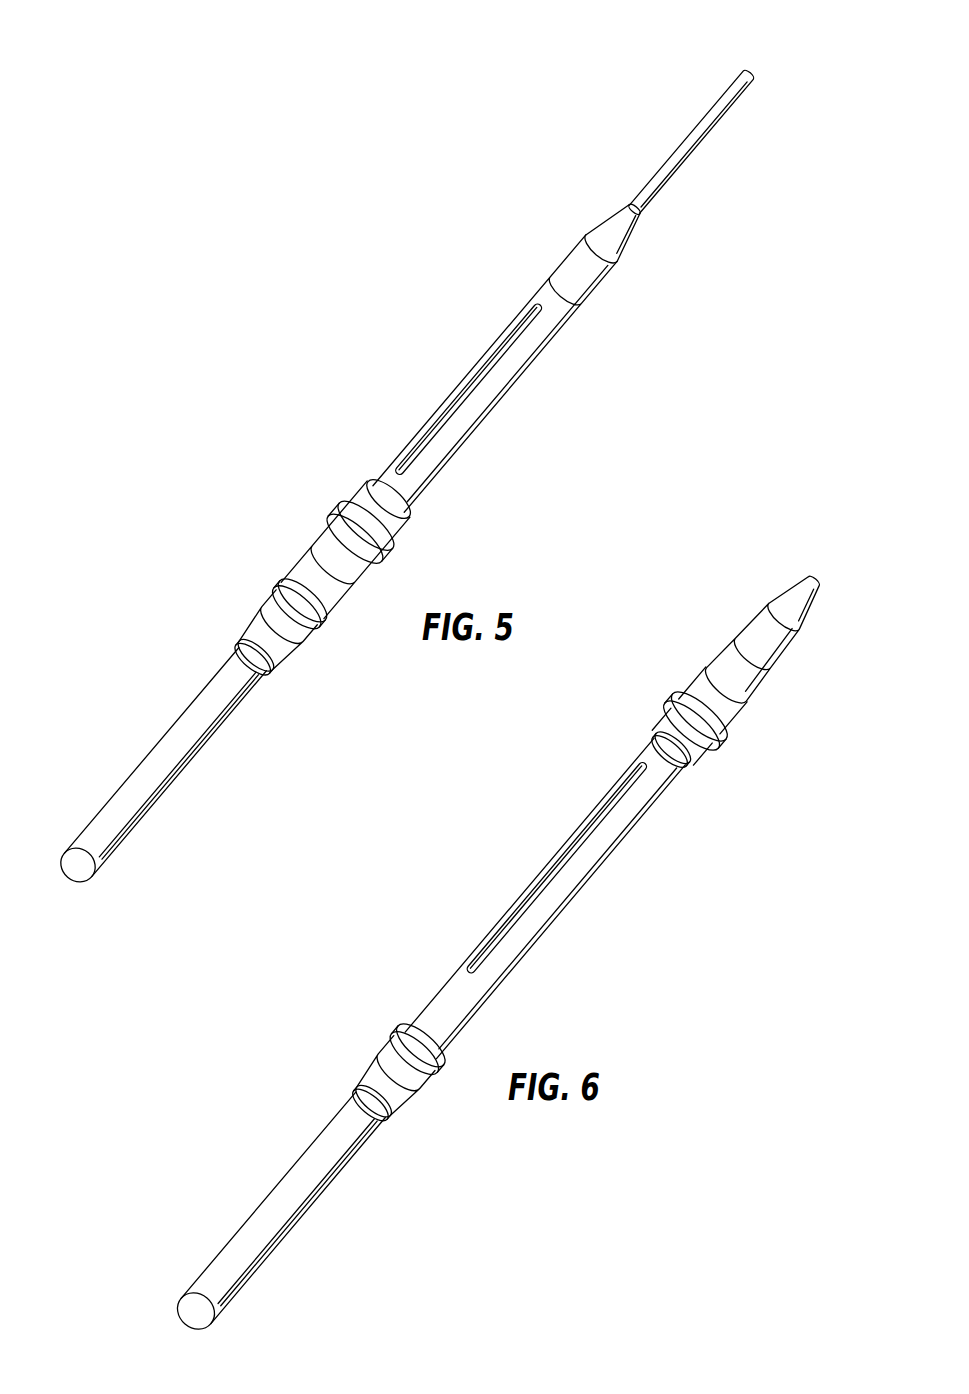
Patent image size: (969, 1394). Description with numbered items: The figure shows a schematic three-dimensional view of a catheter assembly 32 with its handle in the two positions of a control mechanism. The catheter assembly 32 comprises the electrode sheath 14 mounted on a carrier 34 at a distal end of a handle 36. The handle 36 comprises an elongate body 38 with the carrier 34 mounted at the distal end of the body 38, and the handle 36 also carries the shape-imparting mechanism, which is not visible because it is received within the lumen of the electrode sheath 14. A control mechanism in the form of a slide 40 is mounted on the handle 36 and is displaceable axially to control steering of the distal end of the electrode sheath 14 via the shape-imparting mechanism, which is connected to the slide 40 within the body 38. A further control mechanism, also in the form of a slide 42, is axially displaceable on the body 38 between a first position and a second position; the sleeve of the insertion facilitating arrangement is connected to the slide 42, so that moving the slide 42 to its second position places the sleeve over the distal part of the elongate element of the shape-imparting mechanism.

In FIG. 5, the electrode sheath 14 is at (698, 146).
In FIG. 5, the catheter assembly 32 is at (392, 360).
In FIG. 6, the catheter assembly 32 is at (515, 850).
In FIG. 5, the carrier 34 is at (628, 238).
In FIG. 6, the carrier 34 is at (812, 603).
In FIG. 5, the handle 36 is at (464, 446).
In FIG. 6, the handle 36 is at (545, 898).
In FIG. 5, the elongate body 38 is at (198, 758).
In FIG. 6, the elongate body 38 is at (307, 1212).
In FIG. 5, the slide 40 is at (272, 588).
In FIG. 6, the slide 40 is at (388, 1033).
In FIG. 5, the slide 42 is at (397, 550).
In FIG. 6, the slide 42 is at (730, 740).